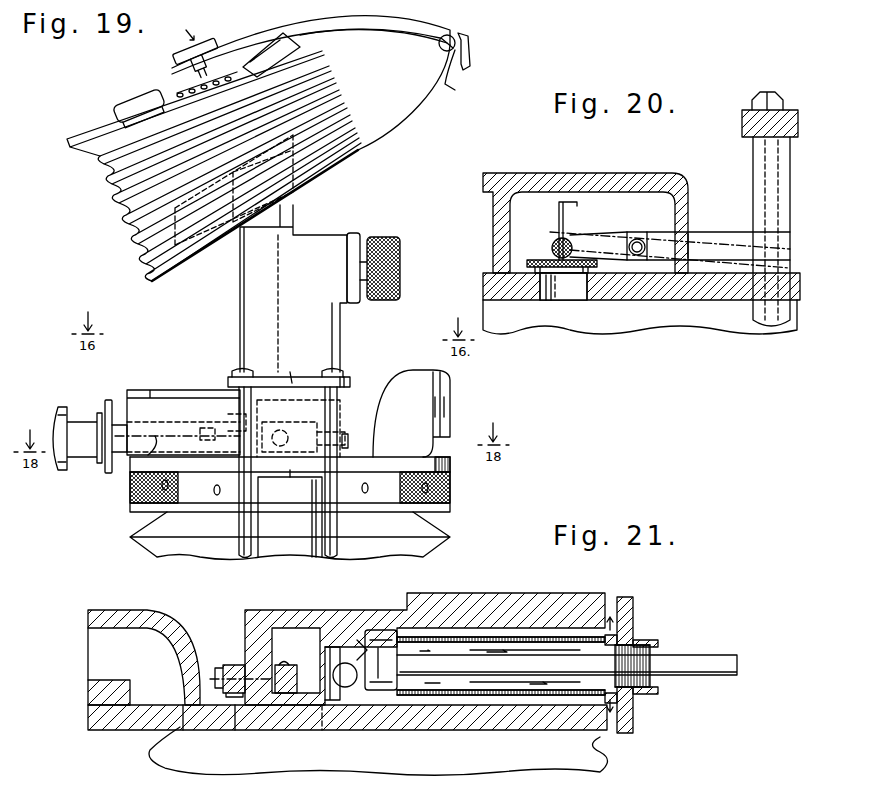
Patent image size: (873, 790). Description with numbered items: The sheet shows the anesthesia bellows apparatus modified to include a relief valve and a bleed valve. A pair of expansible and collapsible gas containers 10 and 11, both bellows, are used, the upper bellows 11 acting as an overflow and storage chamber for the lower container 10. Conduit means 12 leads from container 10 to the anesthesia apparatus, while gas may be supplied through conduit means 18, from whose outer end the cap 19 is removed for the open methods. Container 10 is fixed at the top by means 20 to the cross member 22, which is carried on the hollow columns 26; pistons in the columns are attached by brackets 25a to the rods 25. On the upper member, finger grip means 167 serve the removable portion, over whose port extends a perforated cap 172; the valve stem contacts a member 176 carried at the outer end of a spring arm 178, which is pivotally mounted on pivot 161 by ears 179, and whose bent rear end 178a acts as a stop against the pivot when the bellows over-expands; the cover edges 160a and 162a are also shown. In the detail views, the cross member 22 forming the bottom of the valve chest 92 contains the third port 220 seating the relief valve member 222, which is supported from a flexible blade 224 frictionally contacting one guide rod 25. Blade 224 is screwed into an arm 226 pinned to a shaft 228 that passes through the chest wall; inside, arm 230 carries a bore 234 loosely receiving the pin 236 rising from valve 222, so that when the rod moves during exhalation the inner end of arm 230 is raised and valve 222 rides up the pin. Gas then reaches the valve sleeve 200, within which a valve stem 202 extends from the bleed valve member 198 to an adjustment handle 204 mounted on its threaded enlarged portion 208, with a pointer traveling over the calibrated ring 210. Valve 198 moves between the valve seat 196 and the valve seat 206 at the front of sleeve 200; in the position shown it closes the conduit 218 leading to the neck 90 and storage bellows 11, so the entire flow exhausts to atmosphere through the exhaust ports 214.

In FIG. 19, the gas container 10 is at (430, 552).
In FIG. 20, the gas container 10 is at (566, 333).
In FIG. 21, the gas container 10 is at (400, 760).
In FIG. 19, the gas container 11 is at (110, 208).
In FIG. 19, the conduit means 12 is at (413, 374).
In FIG. 21, the conduit means 12 is at (125, 612).
In FIG. 19, the conduit means 18 is at (355, 235).
In FIG. 19, the cap 19 is at (385, 238).
In FIG. 19, the fixing means 20 is at (452, 490).
In FIG. 19, the cross member 22 is at (178, 395).
In FIG. 20, the cross member 22 is at (673, 298).
In FIG. 21, the cross member 22 is at (512, 730).
In FIG. 19, the rods 25 is at (238, 527).
In FIG. 20, the rods 25 is at (778, 176).
In FIG. 19, the brackets 25a is at (296, 363).
In FIG. 20, the brackets 25a is at (785, 112).
In FIG. 19, the hollow columns 26 is at (300, 516).
In FIG. 19, the neck 90 is at (306, 297).
In FIG. 20, the valve chest 92 is at (662, 174).
In FIG. 19, the cover inner edge 160a is at (403, 48).
In FIG. 19, the pivot 161 is at (455, 90).
In FIG. 19, the cover end edge 162a is at (416, 105).
In FIG. 19, the finger grip means 167 is at (138, 102).
In FIG. 19, the perforated cap 172 is at (238, 65).
In FIG. 19, the member 176 is at (212, 42).
In FIG. 19, the spring arm 178 is at (360, 36).
In FIG. 19, the rear end 178a is at (470, 60).
In FIG. 19, the ears 179 is at (456, 36).
In FIG. 19, the valve seat 196 is at (272, 386).
In FIG. 21, the valve seat 196 is at (335, 660).
In FIG. 19, the valve member 198 is at (232, 417).
In FIG. 21, the valve member 198 is at (383, 640).
In FIG. 19, the valve sleeve 200 is at (160, 382).
In FIG. 21, the valve sleeve 200 is at (525, 598).
In FIG. 19, the valve stem 202 is at (205, 450).
In FIG. 21, the valve stem 202 is at (458, 660).
In FIG. 19, the adjustment handle 204 is at (60, 407).
In FIG. 21, the valve seat 206 is at (406, 600).
In FIG. 21, the enlarged portion 208 is at (645, 640).
In FIG. 19, the calibrated ring 210 is at (108, 400).
In FIG. 21, the calibrated ring 210 is at (632, 598).
In FIG. 21, the exhaust ports 214 is at (648, 640).
In FIG. 21, the conduit 218 is at (348, 688).
In FIG. 20, the third port 220 is at (547, 303).
In FIG. 19, the valve member 222 is at (295, 458).
In FIG. 20, the valve member 222 is at (535, 258).
In FIG. 19, the flexible blade 224 is at (347, 435).
In FIG. 20, the flexible blade 224 is at (725, 260).
In FIG. 21, the flexible blade 224 is at (218, 672).
In FIG. 20, the arm 226 is at (700, 248).
In FIG. 21, the arm 226 is at (236, 665).
In FIG. 20, the shaft 228 is at (650, 238).
In FIG. 19, the arm 230 is at (300, 437).
In FIG. 20, the arm 230 is at (645, 240).
In FIG. 21, the arm 230 is at (290, 663).
In FIG. 20, the slot or bore 234 is at (582, 238).
In FIG. 20, the pin 236 is at (561, 202).